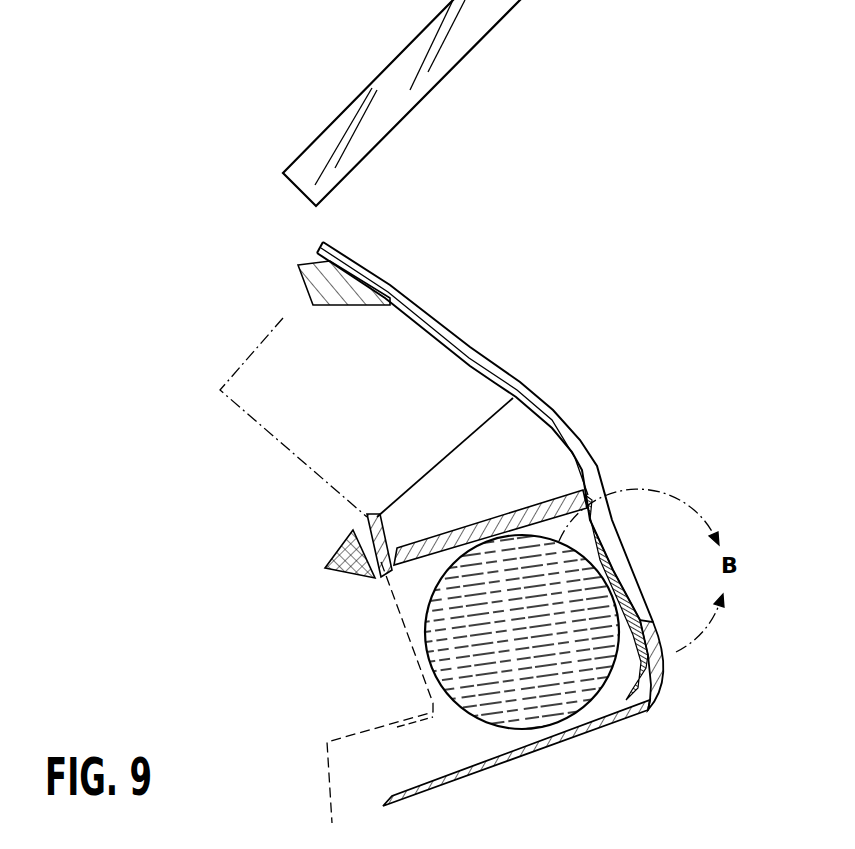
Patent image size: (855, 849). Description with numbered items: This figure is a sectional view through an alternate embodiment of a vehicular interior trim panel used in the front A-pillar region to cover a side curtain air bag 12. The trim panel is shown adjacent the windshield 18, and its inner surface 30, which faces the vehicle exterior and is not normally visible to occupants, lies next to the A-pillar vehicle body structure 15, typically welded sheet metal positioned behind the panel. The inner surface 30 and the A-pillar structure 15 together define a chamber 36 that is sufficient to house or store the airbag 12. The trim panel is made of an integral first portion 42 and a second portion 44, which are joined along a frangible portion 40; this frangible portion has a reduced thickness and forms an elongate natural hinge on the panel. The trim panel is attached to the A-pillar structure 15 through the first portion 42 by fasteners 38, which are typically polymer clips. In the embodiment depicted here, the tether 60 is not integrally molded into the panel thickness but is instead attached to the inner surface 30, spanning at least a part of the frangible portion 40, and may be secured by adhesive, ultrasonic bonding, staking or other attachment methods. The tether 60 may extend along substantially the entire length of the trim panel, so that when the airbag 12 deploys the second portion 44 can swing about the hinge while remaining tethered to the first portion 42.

The side curtain air bag 12 is at (535, 673).
The A-pillar vehicle body structure 15 is at (395, 650).
The windshield 18 is at (395, 100).
The inner surface 30 is at (447, 777).
The chamber 36 is at (413, 593).
The fasteners 38 is at (312, 556).
The frangible portion 40 is at (607, 580).
The first portion 42 is at (420, 320).
The second portion 44 is at (657, 693).
The tether 60 is at (602, 513).